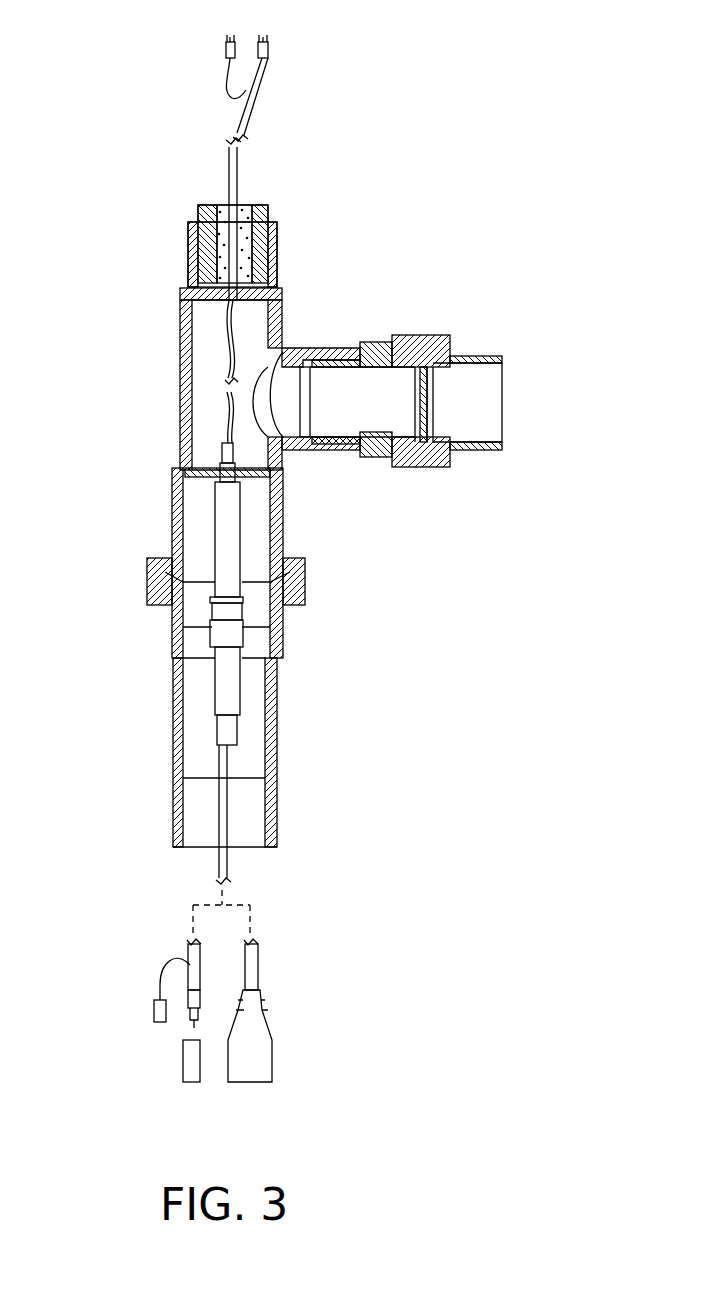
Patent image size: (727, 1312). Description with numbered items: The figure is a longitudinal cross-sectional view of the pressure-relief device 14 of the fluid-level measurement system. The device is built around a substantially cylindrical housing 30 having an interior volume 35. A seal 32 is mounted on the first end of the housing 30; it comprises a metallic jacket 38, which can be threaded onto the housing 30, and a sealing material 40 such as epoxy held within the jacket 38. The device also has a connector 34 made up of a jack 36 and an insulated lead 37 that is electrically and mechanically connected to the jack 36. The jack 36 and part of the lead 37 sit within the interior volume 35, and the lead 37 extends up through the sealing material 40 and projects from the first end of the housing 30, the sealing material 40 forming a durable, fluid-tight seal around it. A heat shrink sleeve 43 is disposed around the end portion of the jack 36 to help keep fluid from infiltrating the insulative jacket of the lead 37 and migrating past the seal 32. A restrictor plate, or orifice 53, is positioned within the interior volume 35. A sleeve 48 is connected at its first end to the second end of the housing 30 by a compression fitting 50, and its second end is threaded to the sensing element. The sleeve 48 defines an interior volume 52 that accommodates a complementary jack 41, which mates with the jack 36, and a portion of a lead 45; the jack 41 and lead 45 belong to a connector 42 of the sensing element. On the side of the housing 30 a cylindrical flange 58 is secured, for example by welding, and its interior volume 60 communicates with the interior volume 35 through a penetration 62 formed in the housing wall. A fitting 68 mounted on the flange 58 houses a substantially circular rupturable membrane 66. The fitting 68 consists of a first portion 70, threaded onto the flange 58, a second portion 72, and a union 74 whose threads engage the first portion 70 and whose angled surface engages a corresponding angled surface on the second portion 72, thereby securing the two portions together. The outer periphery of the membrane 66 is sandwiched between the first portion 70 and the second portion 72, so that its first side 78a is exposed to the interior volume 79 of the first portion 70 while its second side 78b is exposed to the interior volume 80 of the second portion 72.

The pressure-relief device 14 is at (433, 246).
The housing 30 is at (180, 355).
The seal 32 is at (198, 202).
The connector 34 is at (240, 497).
The interior volume 35 is at (205, 478).
The jack 36 is at (215, 527).
The insulated lead 37 is at (258, 108).
The metallic jacket 38 is at (258, 218).
The sealing material 40 is at (249, 208).
The complementary jack 41 is at (242, 683).
The connector 42 is at (216, 733).
The heat shrink sleeve 43 is at (246, 608).
The lead 45 is at (230, 815).
The sleeve 48 is at (279, 752).
The compression fitting 50 is at (147, 580).
The interior volume 52 is at (200, 673).
The orifice 53 is at (196, 479).
The cylindrical flange 58 is at (322, 348).
The interior volume 60 is at (286, 395).
The penetration 62 is at (284, 344).
The membrane 66 is at (431, 423).
The fitting 68 is at (470, 353).
The first portion 70 is at (371, 341).
The second portion 72 is at (490, 457).
The union 74 is at (438, 469).
The first side 78a is at (413, 405).
The second side 78b is at (423, 389).
The interior volume 79 is at (355, 395).
The interior volume 80 is at (473, 404).